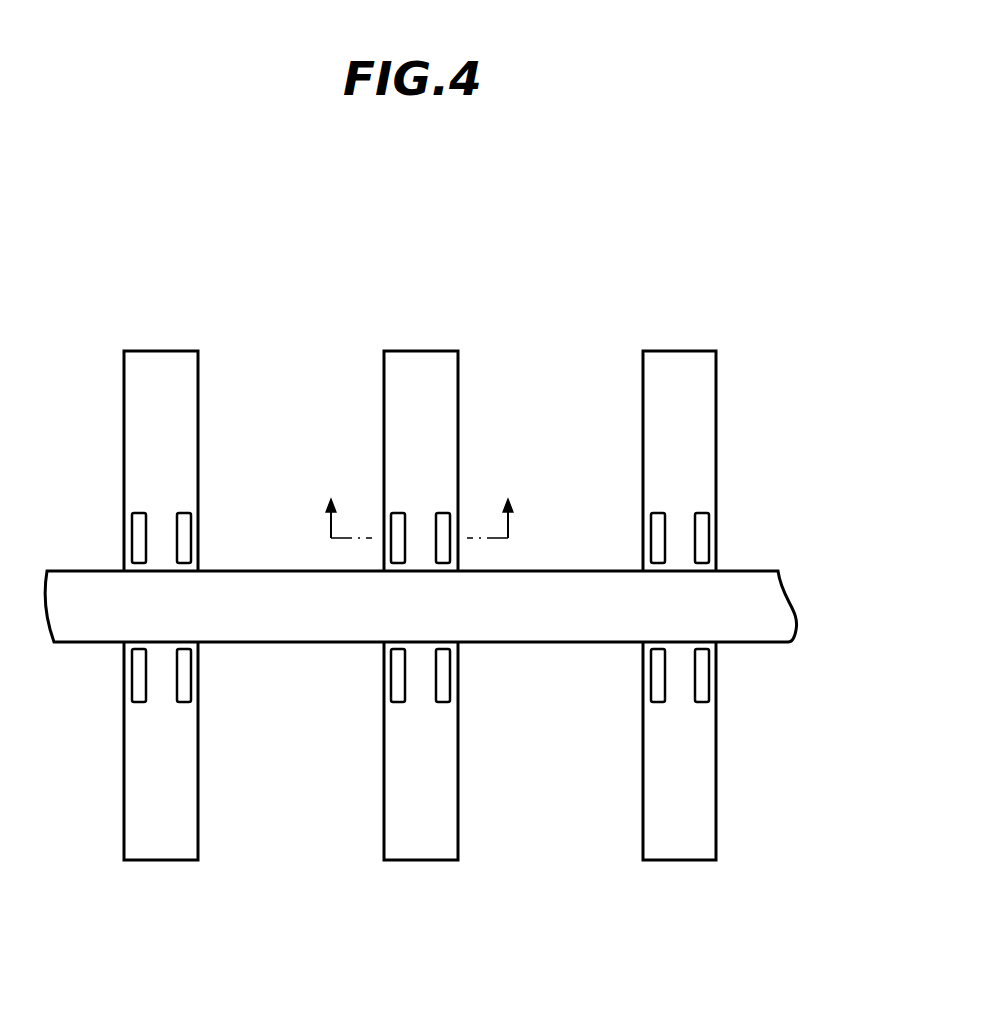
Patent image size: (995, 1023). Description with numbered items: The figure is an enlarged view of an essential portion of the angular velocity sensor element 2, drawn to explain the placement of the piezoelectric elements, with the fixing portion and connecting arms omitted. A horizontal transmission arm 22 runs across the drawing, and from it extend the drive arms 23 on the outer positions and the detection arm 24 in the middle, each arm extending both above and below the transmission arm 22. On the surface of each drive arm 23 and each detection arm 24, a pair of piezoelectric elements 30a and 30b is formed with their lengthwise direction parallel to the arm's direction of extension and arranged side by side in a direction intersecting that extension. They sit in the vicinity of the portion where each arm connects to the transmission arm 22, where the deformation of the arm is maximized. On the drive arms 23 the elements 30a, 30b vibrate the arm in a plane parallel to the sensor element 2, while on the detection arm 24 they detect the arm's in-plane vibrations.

The angular velocity sensor element 2 is at (738, 215).
The transmission arm 22 is at (324, 626).
The drive arm 23 is at (153, 360).
The detection arm 24 is at (427, 358).
The piezoelectric element 30a is at (137, 517).
The piezoelectric element 30b is at (185, 518).